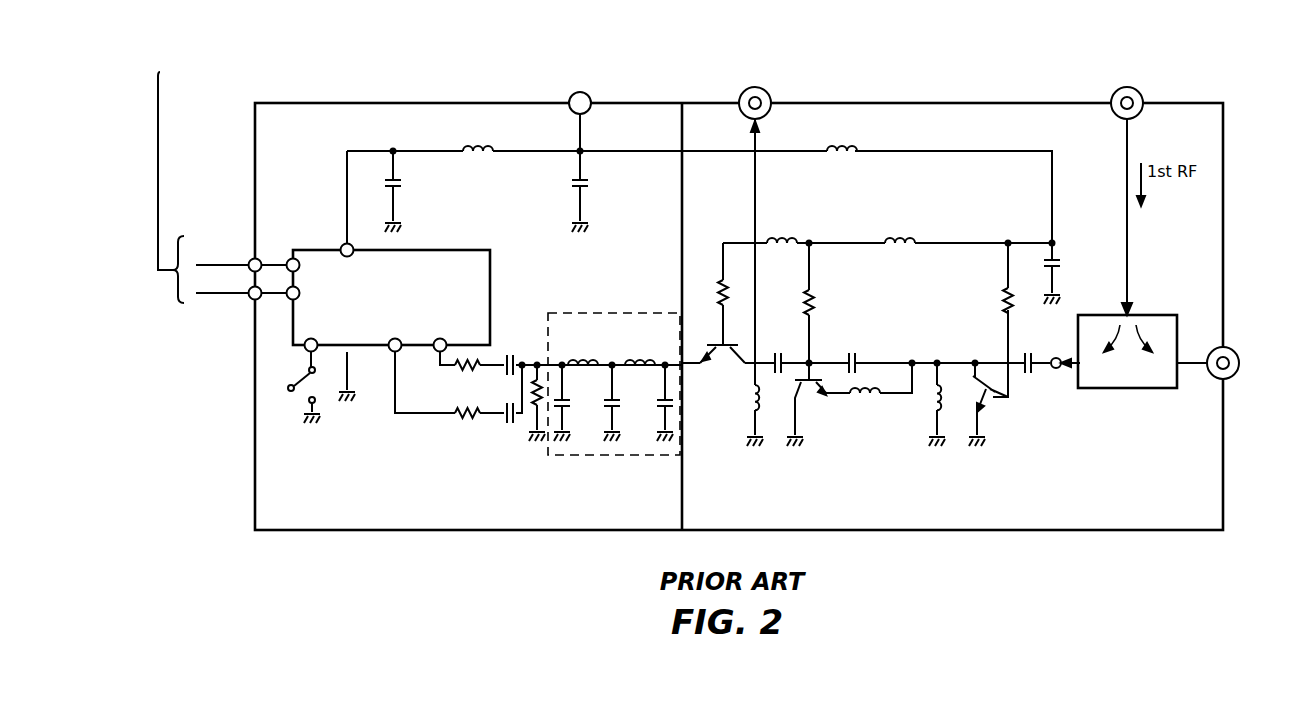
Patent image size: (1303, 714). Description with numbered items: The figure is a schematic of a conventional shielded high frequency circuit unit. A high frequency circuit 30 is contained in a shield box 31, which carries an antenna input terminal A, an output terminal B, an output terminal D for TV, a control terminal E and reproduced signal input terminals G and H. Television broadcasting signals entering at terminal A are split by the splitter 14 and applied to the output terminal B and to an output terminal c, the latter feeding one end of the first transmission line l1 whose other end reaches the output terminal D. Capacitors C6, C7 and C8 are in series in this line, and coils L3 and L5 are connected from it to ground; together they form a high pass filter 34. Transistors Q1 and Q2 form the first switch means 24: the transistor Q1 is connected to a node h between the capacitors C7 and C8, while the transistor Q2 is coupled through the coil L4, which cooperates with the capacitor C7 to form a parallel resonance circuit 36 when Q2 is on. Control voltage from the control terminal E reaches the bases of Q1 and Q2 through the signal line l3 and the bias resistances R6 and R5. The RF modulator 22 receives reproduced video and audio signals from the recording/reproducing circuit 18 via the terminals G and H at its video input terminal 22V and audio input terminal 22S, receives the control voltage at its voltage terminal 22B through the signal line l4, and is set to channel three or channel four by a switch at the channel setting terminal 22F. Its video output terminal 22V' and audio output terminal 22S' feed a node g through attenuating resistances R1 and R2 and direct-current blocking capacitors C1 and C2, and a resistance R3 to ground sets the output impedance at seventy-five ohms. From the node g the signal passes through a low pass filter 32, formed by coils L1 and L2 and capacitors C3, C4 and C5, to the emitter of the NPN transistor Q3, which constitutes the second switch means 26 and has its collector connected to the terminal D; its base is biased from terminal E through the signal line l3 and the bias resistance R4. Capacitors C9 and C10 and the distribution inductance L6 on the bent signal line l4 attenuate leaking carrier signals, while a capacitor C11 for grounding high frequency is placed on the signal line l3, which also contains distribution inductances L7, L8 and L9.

The recording/reproducing circuit 18 is at (264, 167).
The RF modulator 22 is at (475, 268).
The video input terminal 22V is at (279, 249).
The audio input terminal 22S is at (279, 307).
The voltage terminal 22B is at (341, 242).
The channel setting terminal 22F is at (322, 352).
The audio output terminal 22S' is at (390, 400).
The video output terminal 22V' is at (422, 368).
The low pass filter 32 is at (618, 456).
The second switch means 26 is at (718, 343).
The first switch means 24 is at (795, 400).
The parallel resonance circuit 36 is at (853, 378).
The high pass filter 34 is at (897, 418).
The high frequency circuit 30 is at (978, 509).
The splitter 14 is at (1150, 316).
The shield box 31 is at (1224, 168).
The antenna input terminal A is at (1122, 90).
The output terminal B is at (561, 72).
The output terminal for TV D is at (740, 95).
The control terminal E is at (572, 95).
The reproduced signal input terminal G is at (252, 257).
The reproduced signal input terminal H is at (254, 300).
The node g is at (521, 360).
The node h is at (976, 344).
The output terminal c is at (1056, 369).
The resistance for attenuation R1 is at (468, 357).
The resistance for attenuation R2 is at (463, 402).
The resistance R3 is at (532, 422).
The bias resistance R4 is at (735, 294).
The bias resistance R5 is at (823, 311).
The bias resistance R6 is at (1015, 320).
The capacitor for cutting direct current C1 is at (506, 355).
The capacitor for cutting direct current C2 is at (501, 405).
The capacitor C3 is at (572, 402).
The capacitor C4 is at (622, 402).
The capacitor C5 is at (650, 402).
The capacitor C6 is at (774, 354).
The capacitor C7 is at (852, 354).
The capacitor C8 is at (1031, 354).
The capacitor for high frequency attenuation C9 is at (406, 191).
The capacitor for high frequency attenuation C10 is at (602, 173).
The capacitor for grounding high frequency C11 is at (1071, 273).
The coil L1 is at (581, 351).
The coil L2 is at (640, 351).
The coil L3 is at (742, 404).
The coil L4 is at (882, 392).
The coil L5 is at (946, 404).
The distribution inductance L6 is at (478, 164).
The distribution inductance L7 is at (842, 137).
The distribution inductance L8 is at (782, 230).
The distribution inductance L9 is at (899, 230).
The transistor Q1 is at (996, 404).
The transistor Q2 is at (818, 413).
The transistor Q3 is at (722, 367).
The first transmission line l1 is at (898, 358).
The signal line l3 is at (955, 150).
The signal line l4 is at (410, 150).